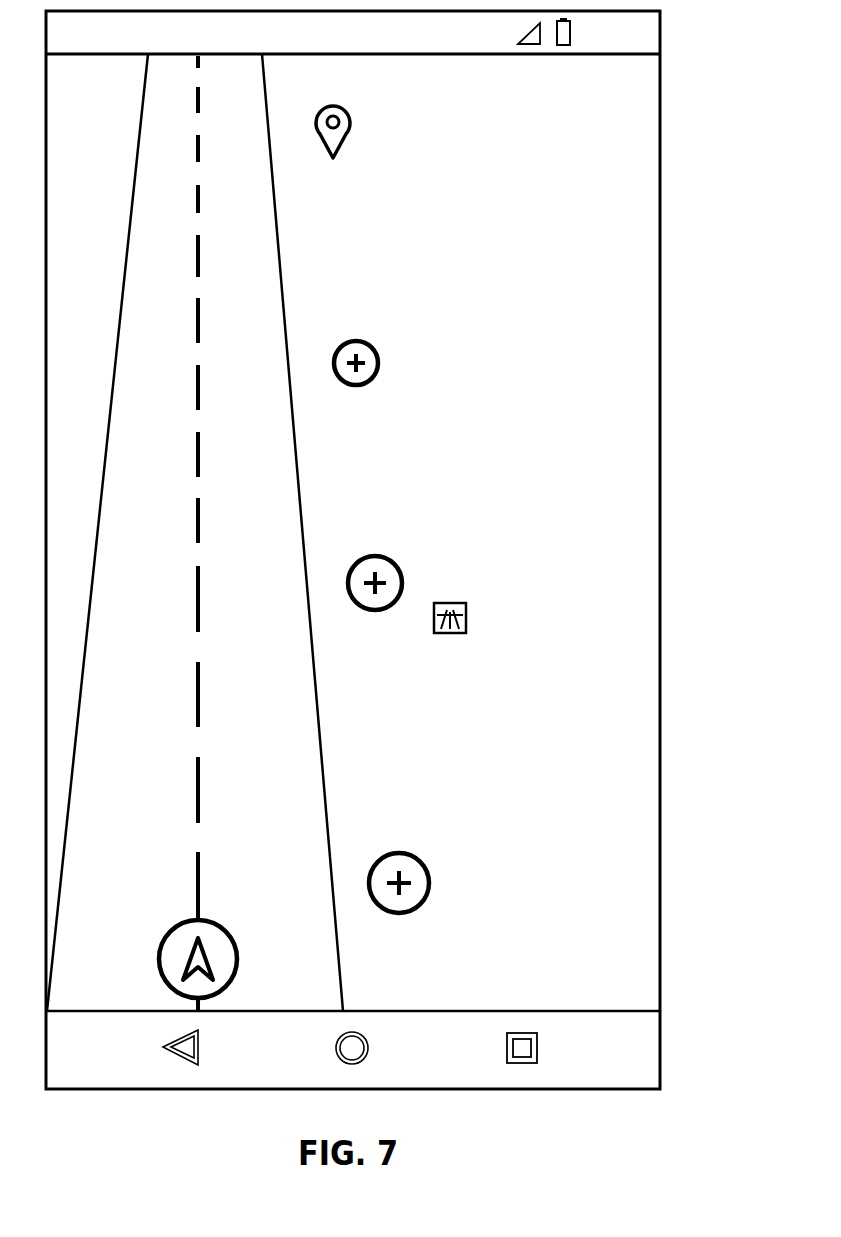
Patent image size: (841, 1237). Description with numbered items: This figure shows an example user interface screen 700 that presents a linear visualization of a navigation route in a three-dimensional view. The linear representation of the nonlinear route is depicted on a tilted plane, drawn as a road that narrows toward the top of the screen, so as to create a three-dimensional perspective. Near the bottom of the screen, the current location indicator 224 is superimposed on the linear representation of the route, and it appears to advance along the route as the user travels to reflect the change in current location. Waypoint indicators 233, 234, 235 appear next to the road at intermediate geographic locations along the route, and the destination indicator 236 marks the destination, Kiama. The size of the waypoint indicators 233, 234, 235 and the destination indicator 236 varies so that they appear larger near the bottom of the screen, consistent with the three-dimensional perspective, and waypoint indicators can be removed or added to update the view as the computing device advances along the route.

The user interface screen 700 is at (662, 135).
The current location indicator 224 is at (218, 923).
The waypoint indicator 233 is at (404, 852).
The waypoint indicator 234 is at (393, 563).
The waypoint indicator 235 is at (357, 338).
The destination indicator 236 is at (338, 102).